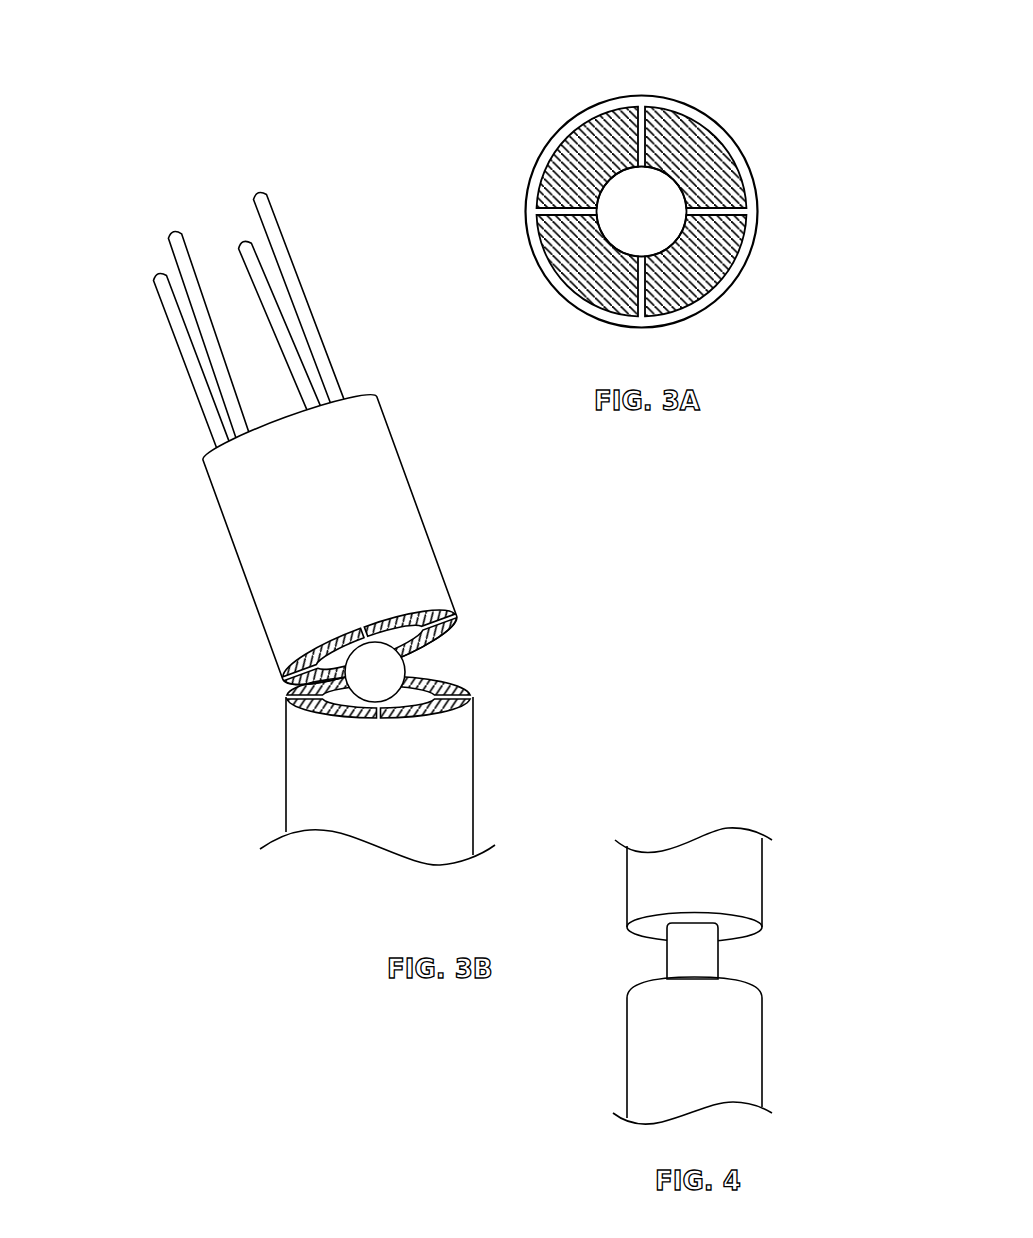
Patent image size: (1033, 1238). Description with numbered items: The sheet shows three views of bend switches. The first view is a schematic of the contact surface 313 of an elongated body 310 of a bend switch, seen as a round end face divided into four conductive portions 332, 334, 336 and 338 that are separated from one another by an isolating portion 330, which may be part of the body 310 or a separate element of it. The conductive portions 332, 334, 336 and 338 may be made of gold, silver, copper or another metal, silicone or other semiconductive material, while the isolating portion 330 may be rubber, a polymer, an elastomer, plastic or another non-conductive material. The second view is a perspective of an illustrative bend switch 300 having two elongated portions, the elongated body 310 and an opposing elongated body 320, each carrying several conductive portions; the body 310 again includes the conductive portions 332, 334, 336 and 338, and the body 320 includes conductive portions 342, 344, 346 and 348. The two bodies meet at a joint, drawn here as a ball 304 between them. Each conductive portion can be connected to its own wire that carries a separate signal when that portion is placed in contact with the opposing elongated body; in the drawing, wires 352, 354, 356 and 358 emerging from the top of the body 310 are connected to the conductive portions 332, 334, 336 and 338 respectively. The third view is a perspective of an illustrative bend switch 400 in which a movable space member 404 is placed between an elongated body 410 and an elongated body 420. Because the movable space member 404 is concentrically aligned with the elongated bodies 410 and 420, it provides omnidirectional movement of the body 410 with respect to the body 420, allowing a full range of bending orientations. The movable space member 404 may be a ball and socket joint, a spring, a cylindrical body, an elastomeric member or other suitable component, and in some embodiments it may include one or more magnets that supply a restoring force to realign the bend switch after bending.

In FIG. 3B, the bend switch 300 is at (116, 200).
In FIG. 3B, the ball joint 304 is at (373, 690).
In FIG. 3A, the elongated body 310 is at (519, 44).
In FIG. 3B, the elongated body 310 is at (430, 532).
In FIG. 3A, the contact surface 313 is at (750, 197).
In FIG. 3B, the elongated body 320 is at (473, 768).
In FIG. 3A, the isolating portion 330 is at (650, 192).
In FIG. 3A, the conductive portion 332 is at (572, 283).
In FIG. 3B, the conductive portion 332 is at (443, 613).
In FIG. 3A, the conductive portion 334 is at (695, 283).
In FIG. 3B, the conductive portion 334 is at (445, 642).
In FIG. 3A, the conductive portion 336 is at (713, 152).
In FIG. 3B, the conductive portion 336 is at (282, 675).
In FIG. 3A, the conductive portion 338 is at (560, 165).
In FIG. 3B, the conductive portion 338 is at (340, 638).
In FIG. 3B, the conductive portion 342 is at (468, 703).
In FIG. 3B, the conductive portion 344 is at (453, 687).
In FIG. 3B, the conductive portion 346 is at (287, 697).
In FIG. 3B, the conductive portion 348 is at (307, 703).
In FIG. 3B, the wire 352 is at (267, 208).
In FIG. 3B, the wire 354 is at (252, 265).
In FIG. 3B, the wire 356 is at (168, 310).
In FIG. 3B, the wire 358 is at (175, 248).
In FIG. 4, the bend switch 400 is at (709, 795).
In FIG. 4, the movable space member 404 is at (716, 962).
In FIG. 4, the elongated body 410 is at (762, 876).
In FIG. 4, the elongated body 420 is at (762, 1053).